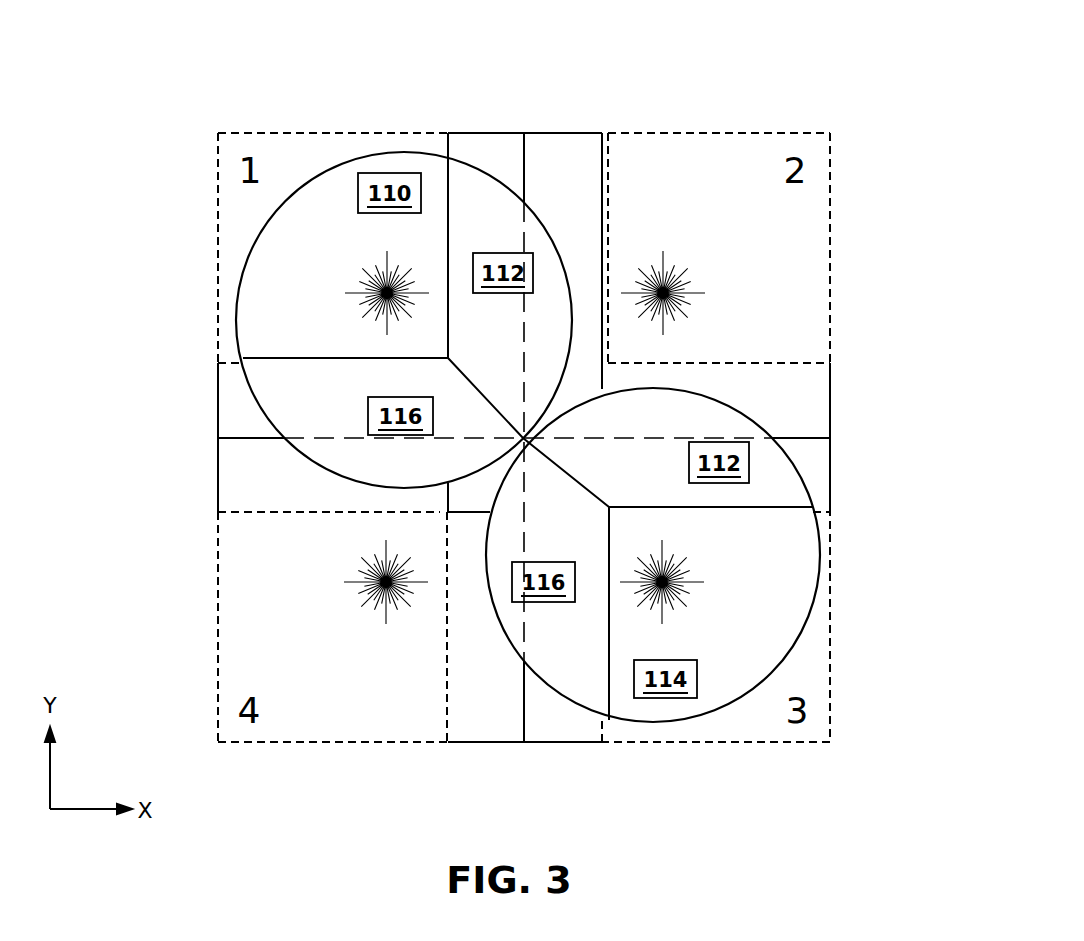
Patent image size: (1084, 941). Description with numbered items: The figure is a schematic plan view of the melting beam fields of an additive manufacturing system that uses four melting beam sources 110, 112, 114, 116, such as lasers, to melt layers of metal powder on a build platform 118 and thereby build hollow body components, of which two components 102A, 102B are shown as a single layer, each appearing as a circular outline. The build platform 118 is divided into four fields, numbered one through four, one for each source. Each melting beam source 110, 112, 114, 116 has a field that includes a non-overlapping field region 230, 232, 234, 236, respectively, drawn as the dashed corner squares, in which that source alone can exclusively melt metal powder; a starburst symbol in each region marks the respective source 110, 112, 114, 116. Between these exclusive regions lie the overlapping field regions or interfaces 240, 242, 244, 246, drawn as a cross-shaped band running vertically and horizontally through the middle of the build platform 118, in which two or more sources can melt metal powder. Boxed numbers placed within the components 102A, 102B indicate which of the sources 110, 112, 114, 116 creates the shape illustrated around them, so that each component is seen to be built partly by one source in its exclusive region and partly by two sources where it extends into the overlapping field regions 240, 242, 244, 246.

The component 102A is at (257, 233).
The component 102B is at (803, 640).
The melting beam source 110 is at (378, 283).
The melting beam source 112 is at (673, 292).
The melting beam source 114 is at (664, 590).
The melting beam source 116 is at (378, 580).
The build platform 118 is at (803, 133).
The non-overlapping field region 230 is at (285, 160).
The non-overlapping field region 232 is at (807, 232).
The non-overlapping field region 234 is at (741, 717).
The non-overlapping field region 236 is at (245, 652).
The overlapping field region 240 is at (565, 97).
The overlapping field region 242 is at (852, 400).
The overlapping field region 244 is at (550, 772).
The overlapping field region 246 is at (186, 485).